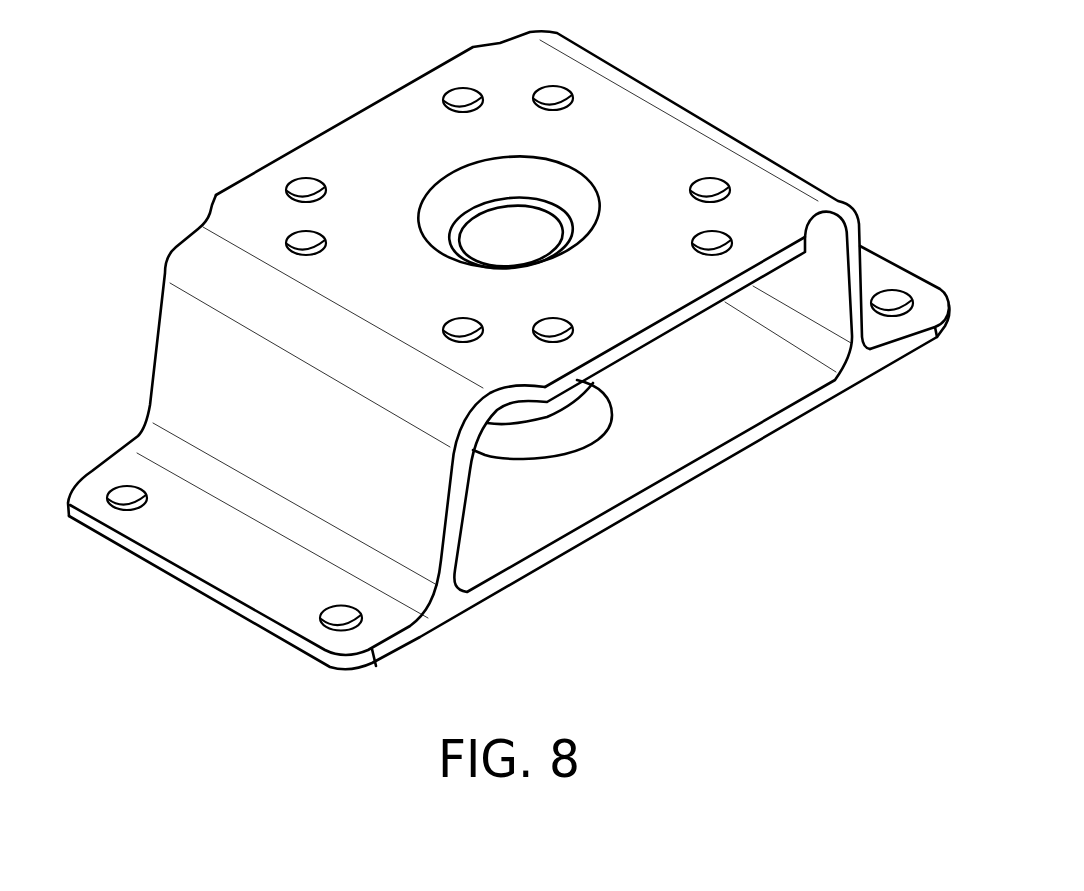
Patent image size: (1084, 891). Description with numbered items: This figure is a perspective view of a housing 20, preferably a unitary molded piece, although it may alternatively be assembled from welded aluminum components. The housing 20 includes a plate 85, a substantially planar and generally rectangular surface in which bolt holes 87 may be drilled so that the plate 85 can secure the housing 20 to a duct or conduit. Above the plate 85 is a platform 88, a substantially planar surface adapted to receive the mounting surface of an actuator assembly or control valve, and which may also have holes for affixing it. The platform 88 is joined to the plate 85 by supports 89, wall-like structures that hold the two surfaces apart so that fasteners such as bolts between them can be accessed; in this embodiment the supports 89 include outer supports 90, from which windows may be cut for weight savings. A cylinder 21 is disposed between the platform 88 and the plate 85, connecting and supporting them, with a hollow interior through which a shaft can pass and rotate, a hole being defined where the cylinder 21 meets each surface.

The housing 20 is at (505, 350).
The cylinder 21 is at (530, 413).
The plate 85 is at (695, 407).
The bolt holes 87 is at (117, 491).
The platform 88 is at (660, 131).
The supports 89 is at (160, 366).
The outer supports 90 is at (318, 458).